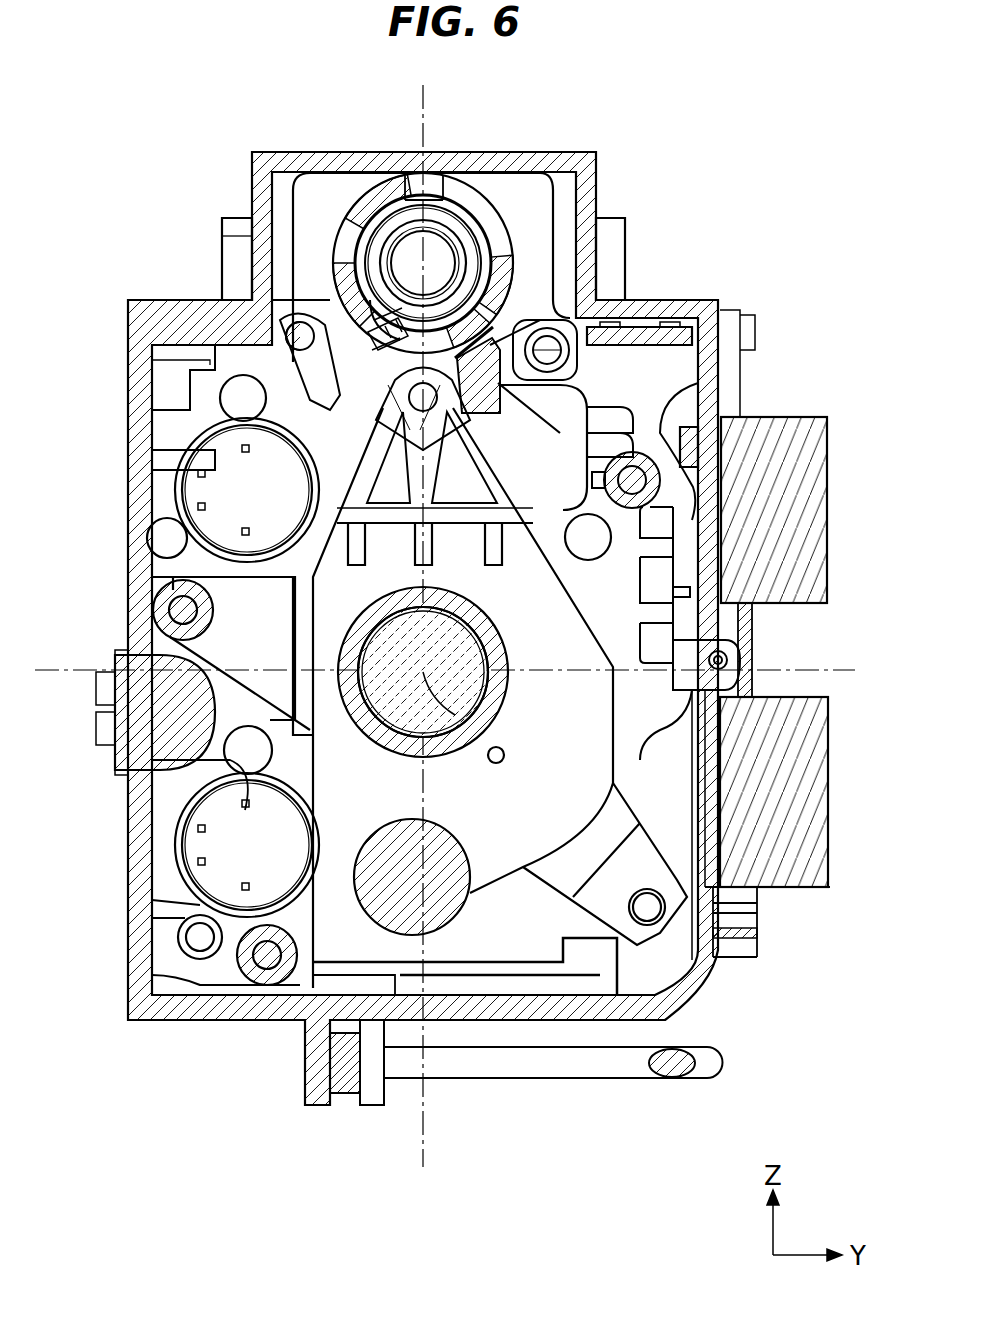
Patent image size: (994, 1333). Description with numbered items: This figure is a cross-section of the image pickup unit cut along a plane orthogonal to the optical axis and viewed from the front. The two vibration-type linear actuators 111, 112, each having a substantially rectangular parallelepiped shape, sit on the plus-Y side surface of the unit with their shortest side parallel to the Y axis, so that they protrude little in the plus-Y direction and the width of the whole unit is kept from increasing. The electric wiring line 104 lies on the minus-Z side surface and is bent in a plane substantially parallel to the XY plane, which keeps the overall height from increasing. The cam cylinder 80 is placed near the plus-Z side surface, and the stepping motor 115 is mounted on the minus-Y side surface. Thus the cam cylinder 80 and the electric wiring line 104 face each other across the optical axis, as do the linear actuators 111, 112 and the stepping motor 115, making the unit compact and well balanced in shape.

The cam cylinder 80 is at (470, 185).
The electric wiring line 104 is at (690, 1075).
The vibration-type linear actuator 111 is at (828, 505).
The vibration-type linear actuator 112 is at (828, 762).
The stepping motor 115 is at (108, 745).